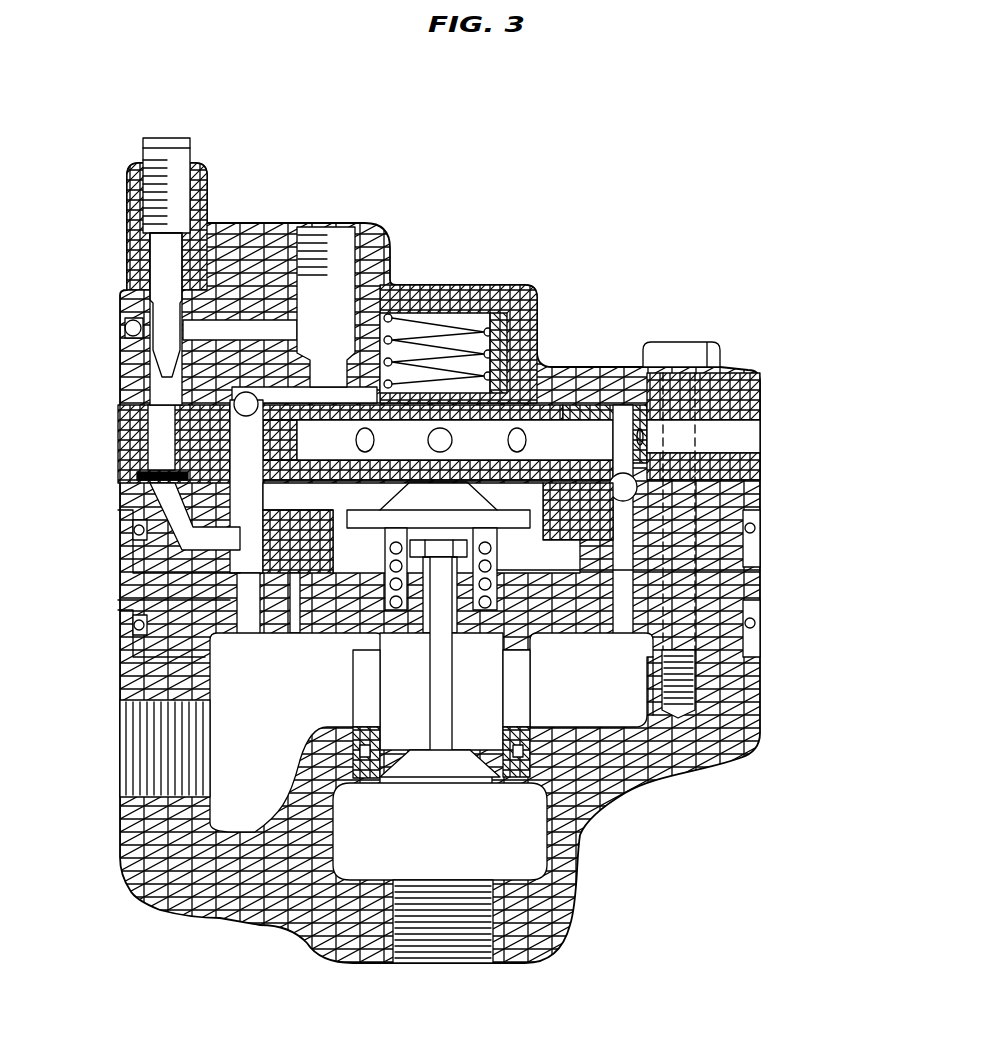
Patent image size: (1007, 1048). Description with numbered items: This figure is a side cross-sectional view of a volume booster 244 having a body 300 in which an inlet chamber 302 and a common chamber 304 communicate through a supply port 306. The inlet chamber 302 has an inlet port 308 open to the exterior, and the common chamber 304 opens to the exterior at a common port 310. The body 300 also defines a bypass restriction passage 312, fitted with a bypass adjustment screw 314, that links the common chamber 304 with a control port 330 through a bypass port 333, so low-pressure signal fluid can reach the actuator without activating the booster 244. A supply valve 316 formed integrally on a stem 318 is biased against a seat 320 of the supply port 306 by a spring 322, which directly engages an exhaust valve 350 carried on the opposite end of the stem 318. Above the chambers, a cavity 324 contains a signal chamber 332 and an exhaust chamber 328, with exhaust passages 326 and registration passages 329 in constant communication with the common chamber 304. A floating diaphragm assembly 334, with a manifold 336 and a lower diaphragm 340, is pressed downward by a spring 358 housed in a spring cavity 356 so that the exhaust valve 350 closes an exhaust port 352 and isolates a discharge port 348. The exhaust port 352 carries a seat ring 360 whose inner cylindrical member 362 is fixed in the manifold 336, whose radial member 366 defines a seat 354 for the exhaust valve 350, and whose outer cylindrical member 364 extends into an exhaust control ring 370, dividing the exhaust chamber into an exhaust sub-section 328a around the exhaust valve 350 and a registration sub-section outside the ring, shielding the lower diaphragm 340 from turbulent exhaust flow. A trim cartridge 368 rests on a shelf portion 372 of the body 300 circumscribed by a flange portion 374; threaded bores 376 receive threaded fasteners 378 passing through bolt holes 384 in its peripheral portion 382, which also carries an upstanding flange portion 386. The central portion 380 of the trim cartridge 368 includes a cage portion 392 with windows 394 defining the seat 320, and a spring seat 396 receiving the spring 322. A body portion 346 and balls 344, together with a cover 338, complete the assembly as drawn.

The volume booster 244 is at (762, 200).
The body 300 is at (765, 742).
The inlet chamber 302 is at (460, 855).
The common chamber 304 is at (275, 757).
The supply port 306 is at (353, 780).
The inlet port 308 is at (455, 963).
The common port 310 is at (120, 770).
The bypass restriction passage 312 is at (133, 560).
The bypass adjustment screw 314 is at (143, 140).
The supply valve 316 is at (460, 778).
The stem 318 is at (437, 712).
The seat 320 is at (385, 780).
The spring 322 is at (487, 633).
The cavity 324 is at (240, 487).
The exhaust passages 326 is at (240, 607).
The exhaust chamber section 328 is at (745, 527).
The exhaust sub-section 328a is at (700, 690).
The registration passages 329 is at (245, 595).
The control port 330 is at (345, 225).
The signal chamber 332 is at (592, 397).
The bypass port 333 is at (247, 330).
The floating diaphragm assembly 334 is at (622, 400).
The manifold 336 is at (610, 407).
The cover 338 is at (755, 410).
The lower diaphragm 340 is at (650, 495).
The ball 344 is at (340, 403).
The body portion 346 is at (240, 437).
The discharge port 348 is at (730, 425).
The exhaust valve 350 is at (460, 505).
The exhaust port 352 is at (495, 390).
The seat 354 is at (383, 500).
The spring cavity 356 is at (460, 330).
The spring 358 is at (497, 328).
The seat ring 360 is at (530, 493).
The inner cylindrical member 362 is at (470, 481).
The outer cylindrical member 364 is at (257, 507).
The radial member 366 is at (352, 495).
The trim cartridge 368 is at (113, 583).
The exhaust control ring 370 is at (113, 507).
The shelf portion 372 is at (757, 648).
The flange portion 374 is at (757, 625).
The threaded bores 376 is at (688, 705).
The threaded fasteners 378 is at (680, 345).
The central portion 380 is at (343, 640).
The peripheral portion 382 is at (727, 607).
The bolt holes 384 is at (762, 500).
The flange portion 386 is at (190, 540).
The cage portion 392 is at (517, 773).
The windows 394 is at (368, 700).
The spring seat 396 is at (330, 610).